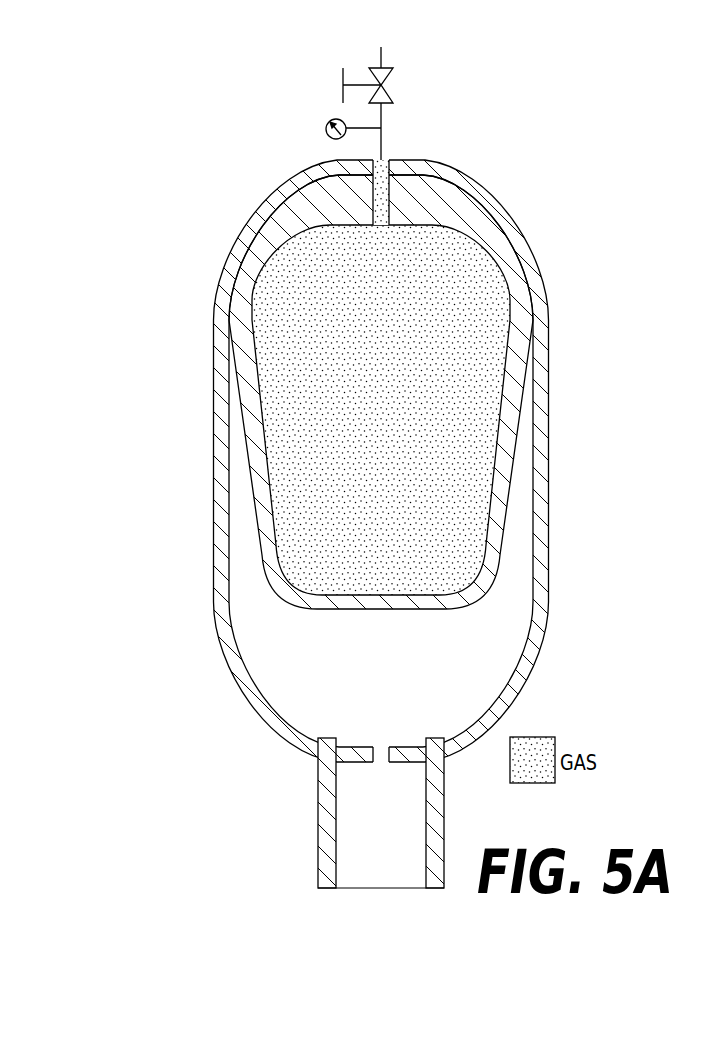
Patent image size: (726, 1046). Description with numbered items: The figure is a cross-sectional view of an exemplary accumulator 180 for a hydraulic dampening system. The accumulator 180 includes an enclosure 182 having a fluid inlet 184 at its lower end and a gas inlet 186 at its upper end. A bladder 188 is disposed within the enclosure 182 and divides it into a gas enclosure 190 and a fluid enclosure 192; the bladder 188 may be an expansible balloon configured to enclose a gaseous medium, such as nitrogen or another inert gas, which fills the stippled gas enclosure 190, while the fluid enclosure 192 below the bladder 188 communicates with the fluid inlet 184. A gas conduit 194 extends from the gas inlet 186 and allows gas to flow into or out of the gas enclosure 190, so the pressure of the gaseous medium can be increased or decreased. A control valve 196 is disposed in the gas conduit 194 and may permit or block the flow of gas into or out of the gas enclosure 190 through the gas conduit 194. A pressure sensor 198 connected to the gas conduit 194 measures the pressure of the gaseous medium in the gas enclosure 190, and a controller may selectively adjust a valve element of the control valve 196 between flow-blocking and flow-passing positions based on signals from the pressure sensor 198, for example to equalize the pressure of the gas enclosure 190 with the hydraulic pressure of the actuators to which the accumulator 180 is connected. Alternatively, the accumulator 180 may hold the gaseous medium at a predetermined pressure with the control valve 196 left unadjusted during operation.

The accumulator 180 is at (354, 506).
The enclosure 182 is at (548, 420).
The fluid inlet 184 is at (382, 862).
The gas inlet 186 is at (384, 165).
The bladder 188 is at (497, 512).
The gas enclosure 190 is at (395, 476).
The fluid enclosure 192 is at (395, 704).
The gas conduit 194 is at (383, 55).
The control valve 196 is at (392, 90).
The pressure sensor 198 is at (326, 132).